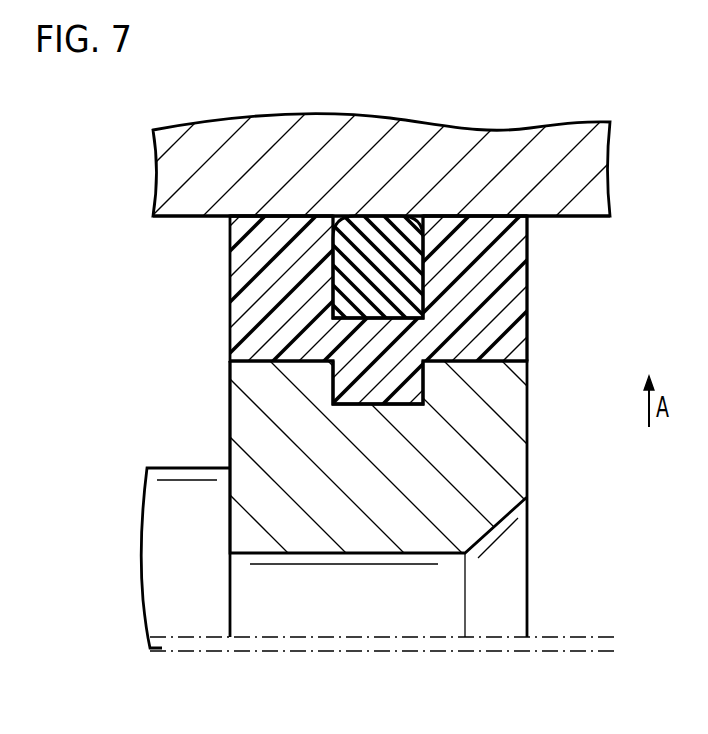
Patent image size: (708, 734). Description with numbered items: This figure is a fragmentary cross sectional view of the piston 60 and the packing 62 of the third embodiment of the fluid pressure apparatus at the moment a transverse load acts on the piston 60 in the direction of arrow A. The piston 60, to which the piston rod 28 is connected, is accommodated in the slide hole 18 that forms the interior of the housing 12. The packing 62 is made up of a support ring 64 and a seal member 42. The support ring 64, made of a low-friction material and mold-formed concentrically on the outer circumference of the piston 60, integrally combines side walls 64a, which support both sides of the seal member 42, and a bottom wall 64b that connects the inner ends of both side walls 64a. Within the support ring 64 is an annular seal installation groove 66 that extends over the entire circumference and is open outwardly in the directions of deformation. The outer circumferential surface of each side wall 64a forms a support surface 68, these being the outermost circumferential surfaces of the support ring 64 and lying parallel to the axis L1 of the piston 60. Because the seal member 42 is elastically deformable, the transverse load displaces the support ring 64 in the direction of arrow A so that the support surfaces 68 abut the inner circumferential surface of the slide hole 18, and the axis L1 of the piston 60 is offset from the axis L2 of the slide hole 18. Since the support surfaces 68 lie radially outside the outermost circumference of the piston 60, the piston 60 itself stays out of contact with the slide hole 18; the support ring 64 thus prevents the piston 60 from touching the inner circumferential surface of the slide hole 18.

The housing 12 is at (600, 183).
The slide hole 18 is at (596, 218).
The piston rod 28 is at (186, 491).
The seal member 42 is at (392, 257).
The piston 60 is at (513, 406).
The packing 62 is at (527, 303).
The support ring 64 is at (529, 252).
The side walls 64a is at (262, 284).
The bottom wall 64b is at (374, 378).
The seal installation groove 66 is at (368, 246).
The support surfaces 68 is at (299, 214).
The axis of the piston L1 is at (600, 637).
The axis of the slide hole L2 is at (560, 652).